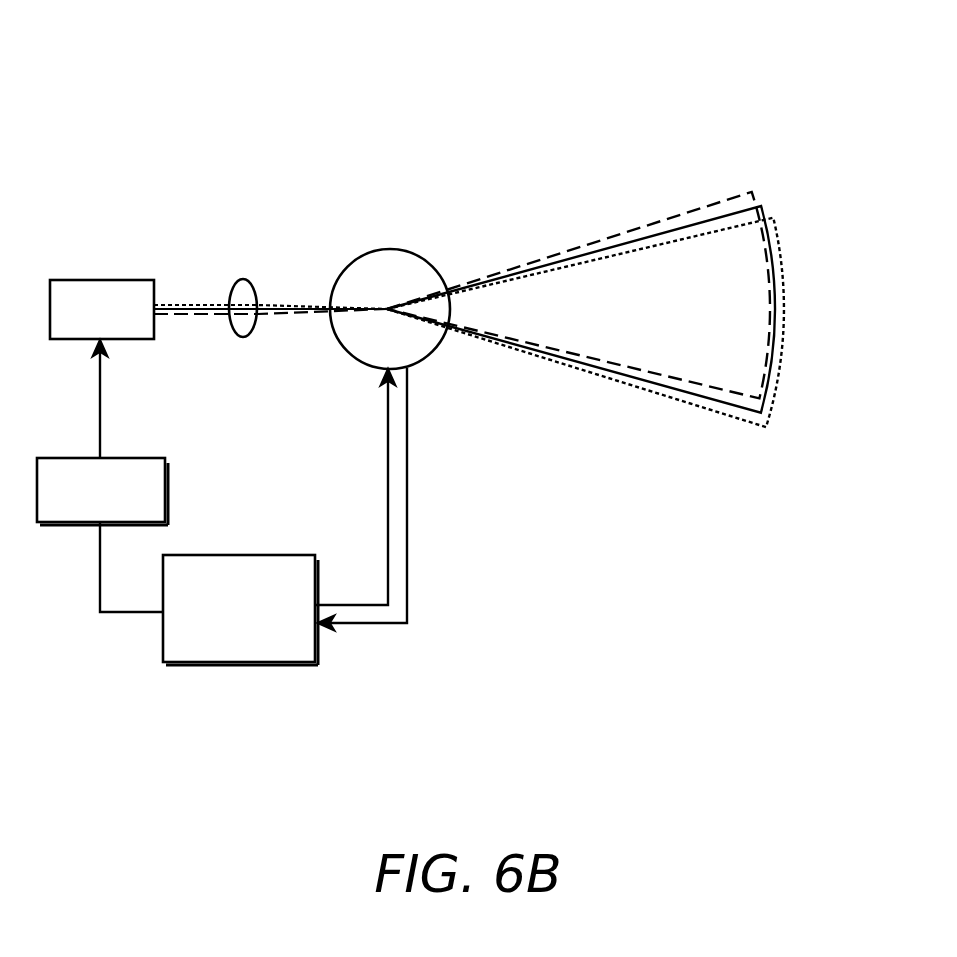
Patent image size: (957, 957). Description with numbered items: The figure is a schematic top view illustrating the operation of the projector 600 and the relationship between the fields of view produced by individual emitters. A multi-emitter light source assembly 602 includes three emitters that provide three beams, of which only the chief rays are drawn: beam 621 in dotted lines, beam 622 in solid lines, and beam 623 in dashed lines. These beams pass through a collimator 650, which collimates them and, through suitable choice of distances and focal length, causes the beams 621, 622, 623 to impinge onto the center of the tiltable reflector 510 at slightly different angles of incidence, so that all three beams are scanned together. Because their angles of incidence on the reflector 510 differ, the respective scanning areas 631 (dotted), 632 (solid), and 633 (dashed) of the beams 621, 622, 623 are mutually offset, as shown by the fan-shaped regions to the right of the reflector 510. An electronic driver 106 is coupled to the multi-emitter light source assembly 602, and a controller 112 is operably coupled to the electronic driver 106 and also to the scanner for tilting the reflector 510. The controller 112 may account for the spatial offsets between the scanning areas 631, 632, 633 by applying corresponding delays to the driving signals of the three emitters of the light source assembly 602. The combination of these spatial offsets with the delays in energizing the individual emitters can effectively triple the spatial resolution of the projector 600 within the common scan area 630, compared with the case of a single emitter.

The projector 600 is at (487, 98).
The multi-emitter light source assembly 602 is at (81, 322).
The beam 621 is at (168, 303).
The beam 622 is at (210, 304).
The beam 623 is at (178, 316).
The collimator 650 is at (243, 338).
The reflector 510 is at (410, 364).
The common scan area 630 is at (659, 314).
The scanning area 631 is at (673, 395).
The scanning area 632 is at (718, 227).
The scanning area 633 is at (582, 247).
The electronic driver 106 is at (79, 501).
The controller 112 is at (219, 616).